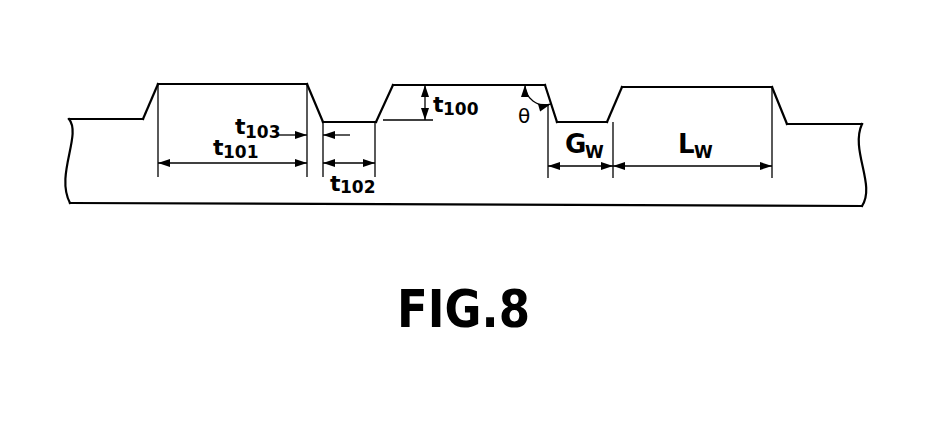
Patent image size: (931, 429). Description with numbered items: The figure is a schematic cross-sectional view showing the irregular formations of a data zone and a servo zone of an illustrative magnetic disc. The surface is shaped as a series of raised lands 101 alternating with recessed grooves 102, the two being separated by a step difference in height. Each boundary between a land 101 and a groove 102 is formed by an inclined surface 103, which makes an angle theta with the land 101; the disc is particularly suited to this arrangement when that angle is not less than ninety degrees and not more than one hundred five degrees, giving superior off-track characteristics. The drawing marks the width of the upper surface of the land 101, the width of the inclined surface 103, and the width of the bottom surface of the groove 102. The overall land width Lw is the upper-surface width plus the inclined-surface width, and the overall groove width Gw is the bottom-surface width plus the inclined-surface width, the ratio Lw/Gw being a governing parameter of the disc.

The land 101 is at (195, 83).
The groove 102 is at (350, 121).
The inclined surface 103 is at (311, 92).